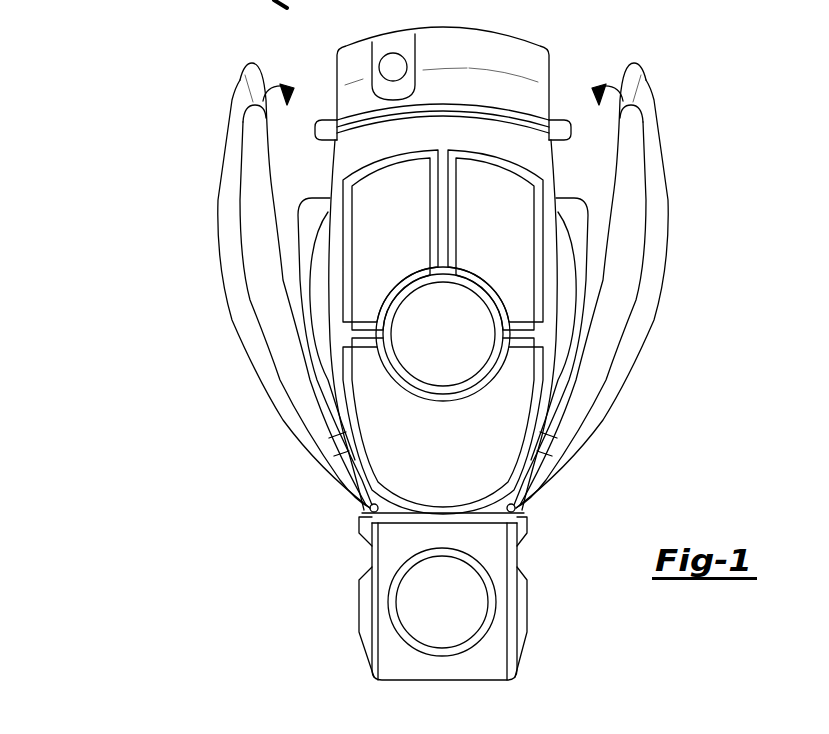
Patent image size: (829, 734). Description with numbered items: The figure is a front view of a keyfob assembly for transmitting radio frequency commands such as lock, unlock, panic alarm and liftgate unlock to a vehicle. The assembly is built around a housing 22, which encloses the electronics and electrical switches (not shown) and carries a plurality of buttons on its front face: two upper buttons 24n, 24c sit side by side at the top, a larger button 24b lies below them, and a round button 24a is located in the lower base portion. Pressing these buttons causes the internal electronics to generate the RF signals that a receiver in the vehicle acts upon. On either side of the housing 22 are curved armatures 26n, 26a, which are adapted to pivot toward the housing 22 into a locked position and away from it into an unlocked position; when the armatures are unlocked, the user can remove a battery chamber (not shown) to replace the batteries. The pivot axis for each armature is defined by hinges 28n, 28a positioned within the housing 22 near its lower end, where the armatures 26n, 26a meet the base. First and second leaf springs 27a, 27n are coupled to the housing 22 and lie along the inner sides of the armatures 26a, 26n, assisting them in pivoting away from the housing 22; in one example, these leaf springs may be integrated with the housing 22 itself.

The housing 22 is at (533, 152).
The button 24n is at (379, 225).
The button 24c is at (487, 225).
The button 24b is at (431, 461).
The button 24a is at (432, 613).
The armature 26n is at (240, 277).
The armature 26a is at (637, 308).
The leaf spring 27n is at (290, 239).
The leaf spring 27a is at (588, 258).
The hinge 28n is at (369, 510).
The hinge 28a is at (516, 510).